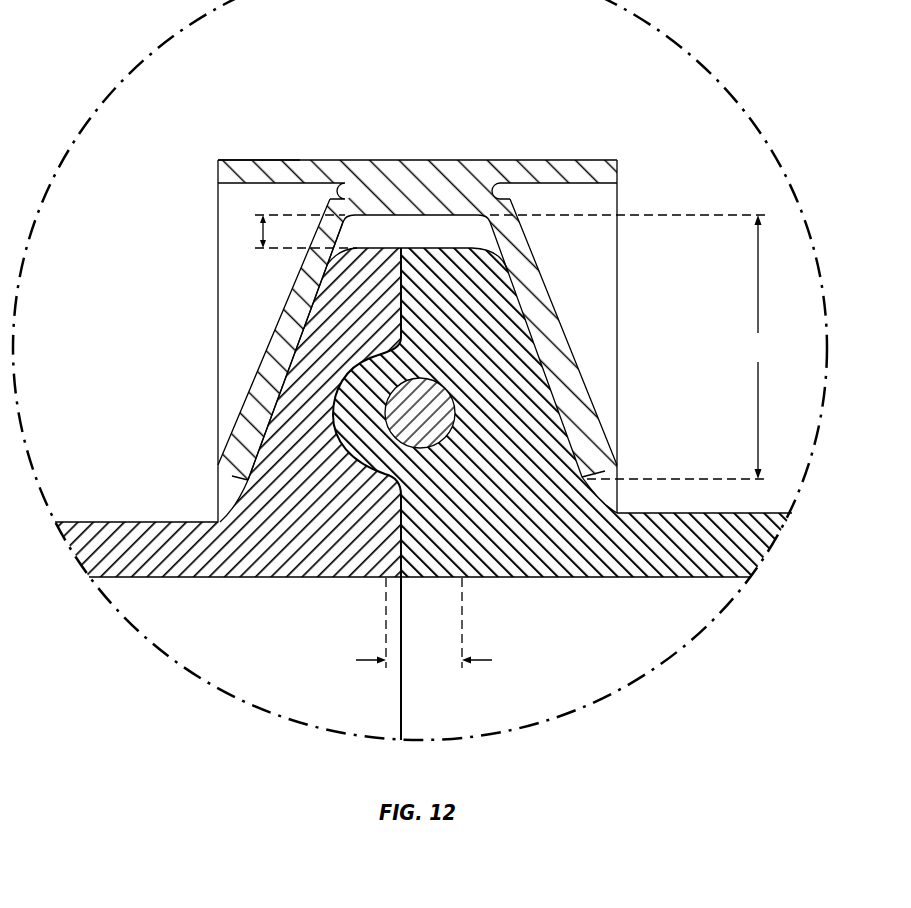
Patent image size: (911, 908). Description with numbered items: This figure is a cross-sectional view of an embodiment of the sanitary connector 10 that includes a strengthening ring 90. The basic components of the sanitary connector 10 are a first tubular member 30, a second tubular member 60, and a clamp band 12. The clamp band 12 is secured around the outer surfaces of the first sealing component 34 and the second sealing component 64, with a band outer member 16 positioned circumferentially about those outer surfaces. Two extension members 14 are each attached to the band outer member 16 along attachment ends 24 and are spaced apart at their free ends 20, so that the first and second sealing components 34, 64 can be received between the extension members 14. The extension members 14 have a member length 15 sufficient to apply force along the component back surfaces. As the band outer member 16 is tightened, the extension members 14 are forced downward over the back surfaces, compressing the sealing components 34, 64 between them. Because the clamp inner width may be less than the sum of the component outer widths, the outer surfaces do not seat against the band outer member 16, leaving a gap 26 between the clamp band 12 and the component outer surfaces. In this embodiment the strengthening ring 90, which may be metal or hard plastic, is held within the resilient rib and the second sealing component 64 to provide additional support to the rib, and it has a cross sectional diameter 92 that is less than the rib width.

The sanitary connector 10 is at (176, 137).
The clamp band 12 is at (612, 172).
The extension members 14 is at (276, 328).
The member length 15 is at (681, 347).
The band outer member 16 is at (228, 174).
The free ends 20 is at (233, 476).
The attachment ends 24 is at (318, 190).
The gap 26 is at (254, 232).
The first tubular member 30 is at (157, 545).
The first sealing component 34 is at (298, 432).
The second tubular member 60 is at (697, 527).
The second sealing component 64 is at (520, 430).
The strengthening ring 90 is at (430, 408).
The cross sectional diameter 92 is at (377, 659).